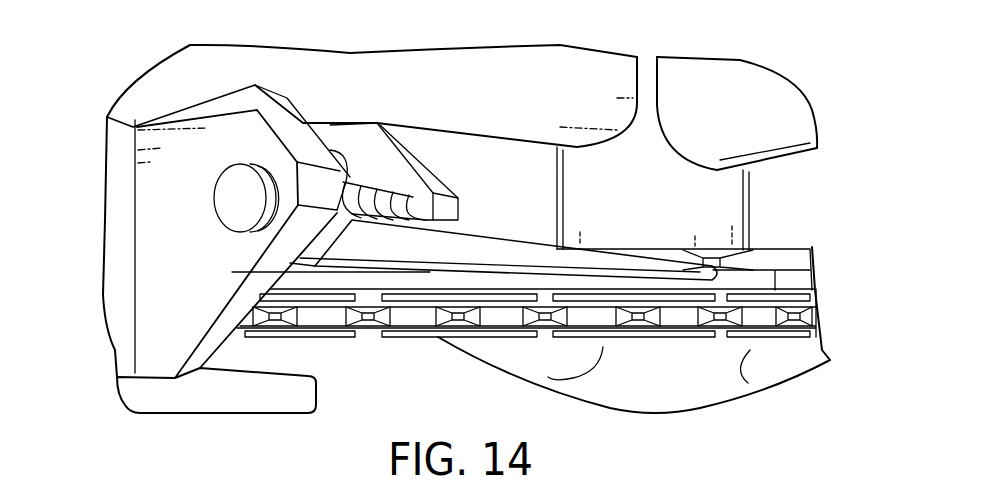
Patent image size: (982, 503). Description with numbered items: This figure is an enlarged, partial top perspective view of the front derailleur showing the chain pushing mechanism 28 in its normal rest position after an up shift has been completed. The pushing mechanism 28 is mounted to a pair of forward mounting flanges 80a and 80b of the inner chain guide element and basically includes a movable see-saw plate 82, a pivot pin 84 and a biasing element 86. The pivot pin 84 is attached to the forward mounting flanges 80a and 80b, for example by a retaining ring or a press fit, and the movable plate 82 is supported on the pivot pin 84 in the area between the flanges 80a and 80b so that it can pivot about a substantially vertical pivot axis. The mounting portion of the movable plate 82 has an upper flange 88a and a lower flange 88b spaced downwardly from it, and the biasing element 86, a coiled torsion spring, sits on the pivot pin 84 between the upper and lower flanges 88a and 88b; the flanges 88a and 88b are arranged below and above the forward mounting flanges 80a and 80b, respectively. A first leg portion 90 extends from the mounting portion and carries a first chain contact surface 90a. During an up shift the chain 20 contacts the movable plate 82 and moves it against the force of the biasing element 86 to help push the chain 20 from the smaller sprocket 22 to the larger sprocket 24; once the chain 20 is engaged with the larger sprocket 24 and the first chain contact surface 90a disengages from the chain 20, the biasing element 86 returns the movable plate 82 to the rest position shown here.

The chain 20 is at (808, 293).
The front sprocket 22 is at (772, 247).
The front sprocket 24 is at (797, 318).
The pushing mechanism 28 is at (389, 100).
The forward mounting flange 80a is at (284, 122).
The forward mounting flange 80b is at (437, 183).
The movable plate 82 is at (590, 240).
The pivot pin 84 is at (237, 196).
The biasing element 86 is at (360, 183).
The upper flange 88a is at (323, 147).
The lower flange 88b is at (404, 193).
The first leg portion 90 is at (473, 246).
The first chain contact surface 90a is at (512, 278).